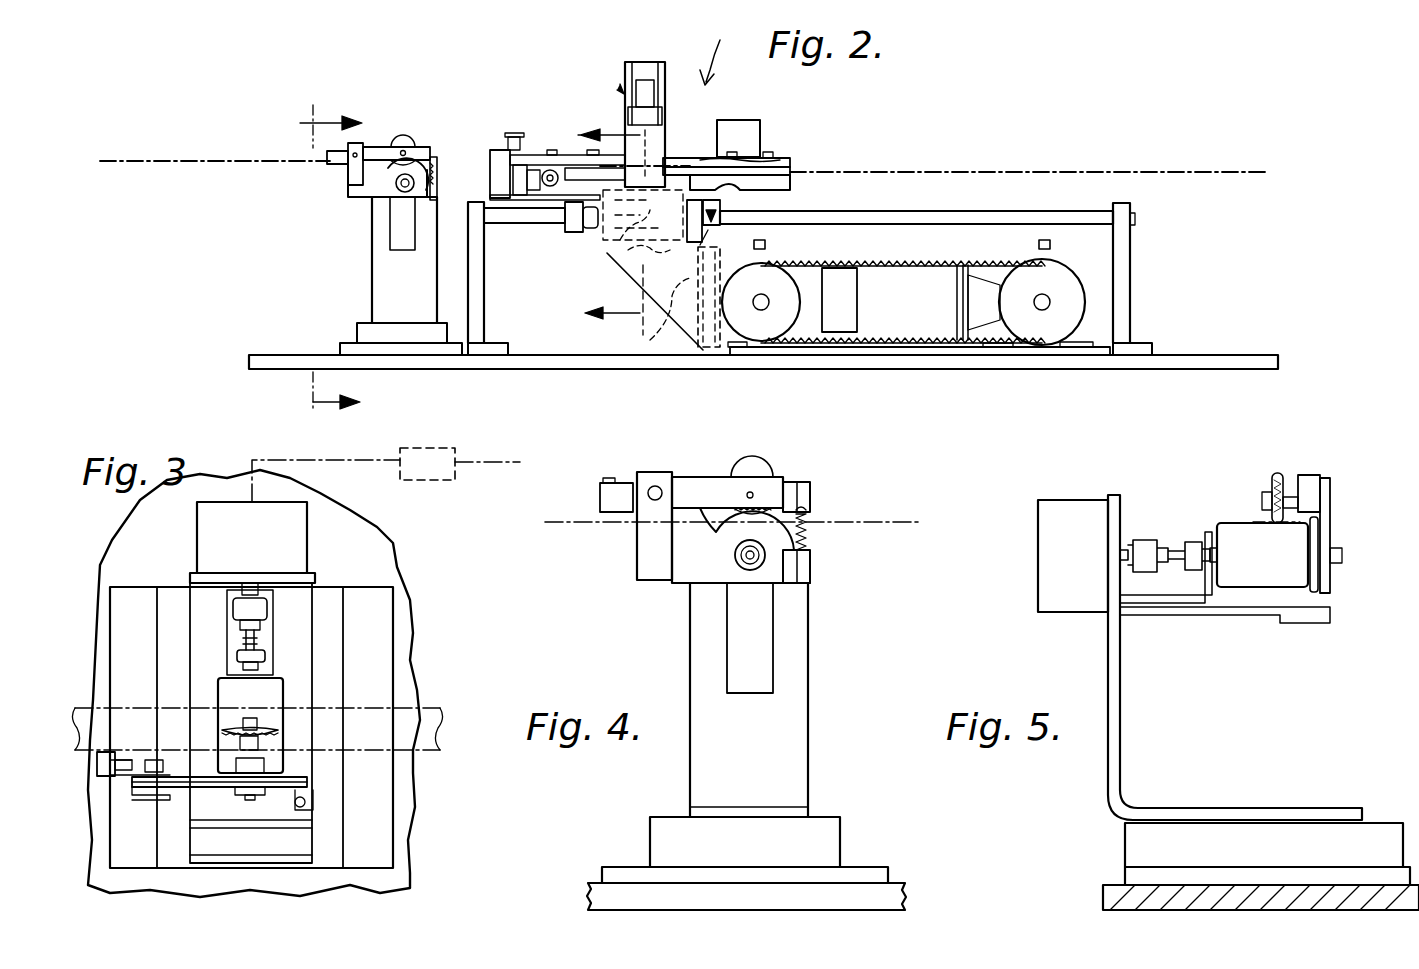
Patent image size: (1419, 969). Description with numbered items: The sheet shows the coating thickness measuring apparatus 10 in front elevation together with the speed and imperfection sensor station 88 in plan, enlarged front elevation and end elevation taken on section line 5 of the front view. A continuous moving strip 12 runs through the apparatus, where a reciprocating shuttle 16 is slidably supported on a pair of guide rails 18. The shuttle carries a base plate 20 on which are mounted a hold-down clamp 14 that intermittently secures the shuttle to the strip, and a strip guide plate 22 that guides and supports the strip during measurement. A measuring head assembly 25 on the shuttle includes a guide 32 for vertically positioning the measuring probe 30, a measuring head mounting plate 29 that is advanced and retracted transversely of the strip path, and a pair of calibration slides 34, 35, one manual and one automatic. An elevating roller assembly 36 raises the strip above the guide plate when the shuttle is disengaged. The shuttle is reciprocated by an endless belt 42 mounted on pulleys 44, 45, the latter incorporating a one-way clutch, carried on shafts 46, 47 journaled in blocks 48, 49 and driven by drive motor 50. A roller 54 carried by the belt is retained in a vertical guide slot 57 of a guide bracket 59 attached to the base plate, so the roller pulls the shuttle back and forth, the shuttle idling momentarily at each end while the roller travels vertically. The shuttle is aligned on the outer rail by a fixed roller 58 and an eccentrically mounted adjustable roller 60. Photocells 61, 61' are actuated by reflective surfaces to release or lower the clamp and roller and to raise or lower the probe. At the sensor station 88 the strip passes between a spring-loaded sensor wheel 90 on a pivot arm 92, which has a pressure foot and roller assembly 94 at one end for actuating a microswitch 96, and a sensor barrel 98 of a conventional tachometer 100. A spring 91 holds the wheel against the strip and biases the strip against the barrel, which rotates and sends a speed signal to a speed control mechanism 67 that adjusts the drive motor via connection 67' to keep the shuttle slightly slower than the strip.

In FIG. 2, the section line 5— 5 is at (331, 257).
In FIG. 2, the apparatus 10 is at (653, 180).
In FIG. 2, the continuous moving strip 12 is at (126, 160).
In FIG. 3, the continuous moving strip 12 is at (433, 709).
In FIG. 4, the continuous moving strip 12 is at (896, 520).
In FIG. 5, the continuous moving strip 12 is at (1253, 522).
In FIG. 2, the hold-down clamp 14 is at (666, 162).
In FIG. 2, the reciprocating shuttle 16 is at (696, 236).
In FIG. 2, the guide rails 18 is at (1038, 214).
In FIG. 2, the base plate 20 is at (752, 188).
In FIG. 2, the strip guide plate 22 is at (708, 156).
In FIG. 2, the measuring head assembly 25 is at (620, 92).
In FIG. 2, the measuring head mounting plate 29 is at (792, 178).
In FIG. 2, the measuring probe 30 is at (656, 90).
In FIG. 2, the guide 32 is at (648, 70).
In FIG. 2, the manual calibration slide 34 is at (522, 148).
In FIG. 2, the automatic calibration slide 35 is at (792, 156).
In FIG. 2, the elevating roller assembly 36 is at (480, 148).
In FIG. 2, the endless belt 42 is at (908, 353).
In FIG. 2, the pulley 44 is at (760, 333).
In FIG. 2, the one-way clutch pulley 45 is at (1040, 330).
In FIG. 2, the shaft 46 is at (768, 298).
In FIG. 2, the shaft 47 is at (1046, 300).
In FIG. 2, the block 48 is at (795, 350).
In FIG. 2, the block 49 is at (1016, 352).
In FIG. 2, the drive motor 50 is at (910, 307).
In FIG. 2, the roller 54 is at (690, 322).
In FIG. 2, the vertical guide slot 57 is at (708, 360).
In FIG. 2, the fixed roller 58 is at (610, 238).
In FIG. 2, the guide bracket 59 is at (630, 270).
In FIG. 2, the adjustable roller 60 is at (618, 248).
In FIG. 2, the photocell 61 is at (1008, 241).
In FIG. 2, the photocell 61' is at (794, 241).
In FIG. 3, the speed control mechanism 67 is at (353, 454).
In FIG. 3, the connection 67' is at (491, 435).
In FIG. 2, the speed sensor/imperfection sensor station 88 is at (408, 118).
In FIG. 3, the speed sensor/imperfection sensor station 88 is at (352, 562).
In FIG. 4, the speed sensor/imperfection sensor station 88 is at (827, 640).
In FIG. 5, the speed sensor/imperfection sensor station 88 is at (1222, 690).
In FIG. 2, the sensor wheel 90 is at (408, 148).
In FIG. 3, the sensor wheel 90 is at (225, 726).
In FIG. 4, the sensor wheel 90 is at (746, 480).
In FIG. 5, the sensor wheel 90 is at (1278, 474).
In FIG. 3, the spring 91 is at (306, 803).
In FIG. 4, the spring 91 is at (810, 540).
In FIG. 2, the pivot arm 92 is at (392, 171).
In FIG. 3, the pivot arm 92 is at (300, 778).
In FIG. 4, the pivot arm 92 is at (710, 483).
In FIG. 3, the pressure foot and roller assembly 94 is at (132, 732).
In FIG. 2, the microswitch 96 is at (338, 166).
In FIG. 3, the microswitch 96 is at (92, 772).
In FIG. 4, the microswitch 96 is at (598, 496).
In FIG. 5, the microswitch 96 is at (1307, 476).
In FIG. 3, the sensor barrel 98 is at (283, 692).
In FIG. 4, the sensor barrel 98 is at (788, 496).
In FIG. 5, the sensor barrel 98 is at (1256, 575).
In FIG. 3, the tachometer 100 is at (298, 513).
In FIG. 5, the tachometer 100 is at (1078, 500).